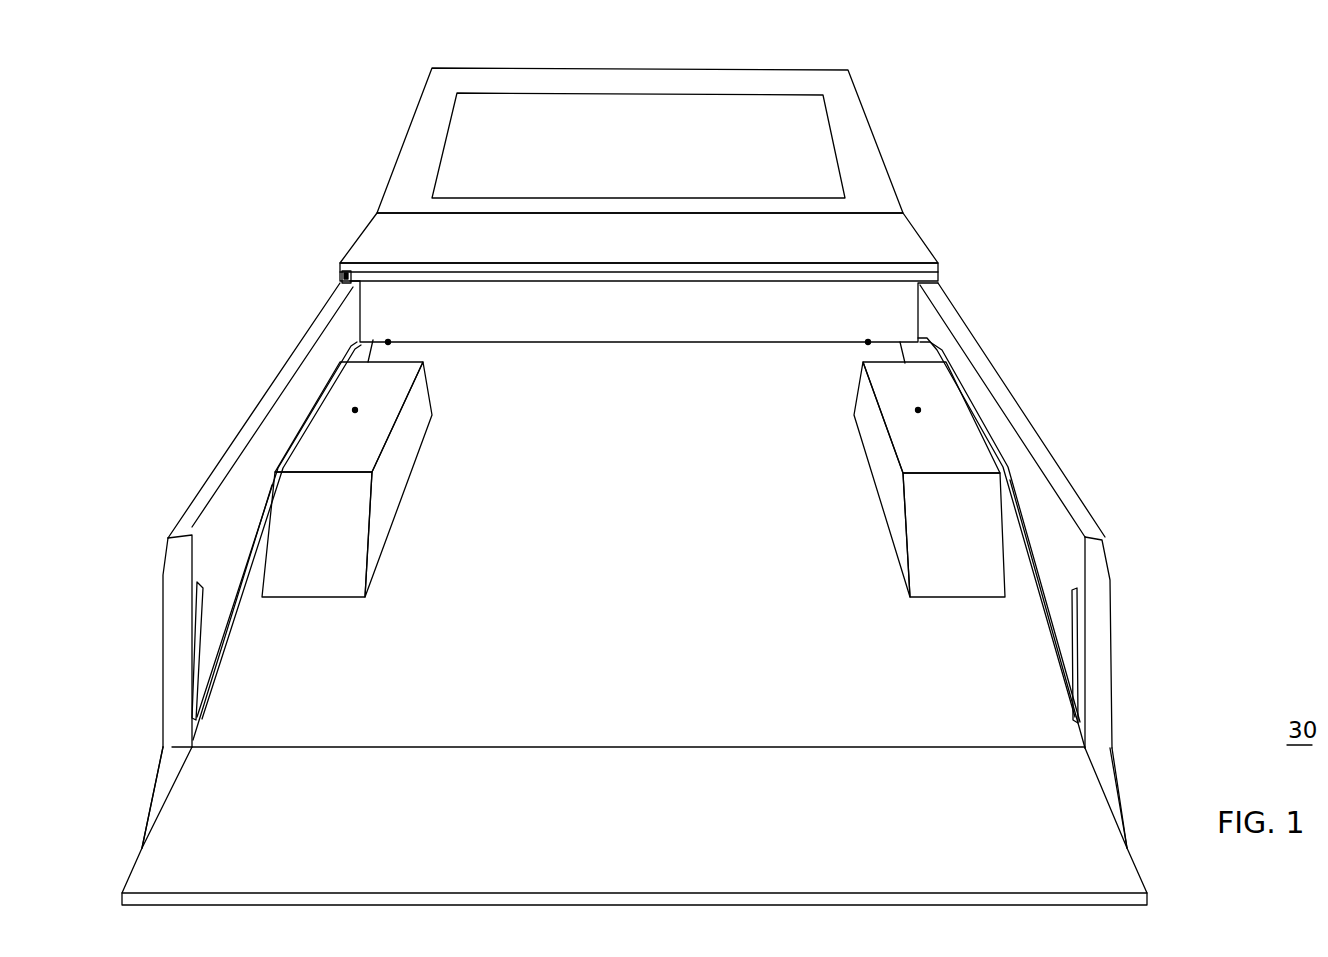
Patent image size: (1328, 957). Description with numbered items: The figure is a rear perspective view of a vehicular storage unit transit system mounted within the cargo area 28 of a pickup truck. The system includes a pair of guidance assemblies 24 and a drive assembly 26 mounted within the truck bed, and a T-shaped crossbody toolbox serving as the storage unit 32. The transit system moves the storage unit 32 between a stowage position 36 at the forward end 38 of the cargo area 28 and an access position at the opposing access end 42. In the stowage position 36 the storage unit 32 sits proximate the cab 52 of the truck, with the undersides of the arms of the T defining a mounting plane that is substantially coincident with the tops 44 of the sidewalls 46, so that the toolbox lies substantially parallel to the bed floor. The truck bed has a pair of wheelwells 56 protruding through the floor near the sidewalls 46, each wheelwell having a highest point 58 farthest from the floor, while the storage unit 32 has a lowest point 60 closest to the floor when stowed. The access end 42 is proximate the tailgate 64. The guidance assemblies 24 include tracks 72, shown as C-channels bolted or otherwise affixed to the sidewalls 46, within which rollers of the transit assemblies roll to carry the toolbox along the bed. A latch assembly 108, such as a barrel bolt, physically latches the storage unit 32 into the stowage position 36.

The guidance assemblies 24 is at (248, 530).
The drive assembly 26 is at (1015, 655).
The cargo area 28 is at (1082, 590).
The storage unit 32 is at (893, 233).
The stowage position 36 is at (948, 215).
The forward end 38 is at (340, 212).
The access end 42 is at (1132, 540).
The tops of sidewalls 44 is at (178, 538).
The sidewalls 46 is at (262, 463).
The cab 52 is at (858, 130).
The wheelwells 56 is at (317, 447).
The highest point 58 is at (355, 410).
The lowest point 60 is at (388, 342).
The tailgate 64 is at (1090, 768).
The tracks 72 is at (233, 583).
The latch assembly 108 is at (345, 277).